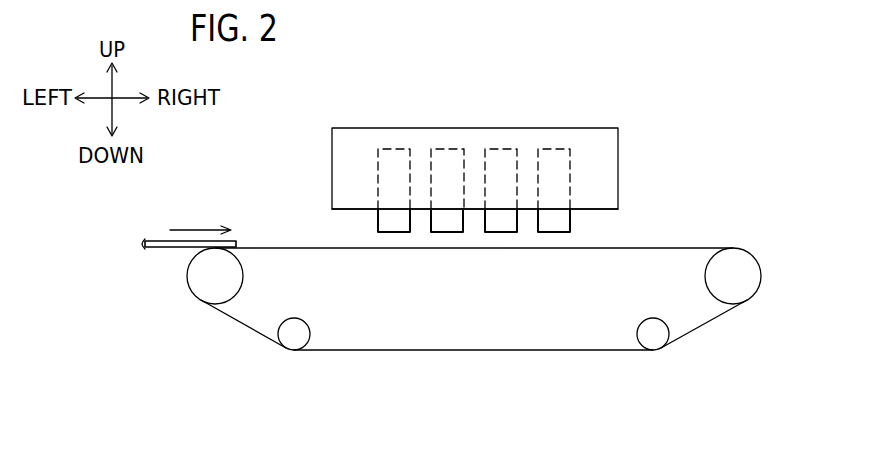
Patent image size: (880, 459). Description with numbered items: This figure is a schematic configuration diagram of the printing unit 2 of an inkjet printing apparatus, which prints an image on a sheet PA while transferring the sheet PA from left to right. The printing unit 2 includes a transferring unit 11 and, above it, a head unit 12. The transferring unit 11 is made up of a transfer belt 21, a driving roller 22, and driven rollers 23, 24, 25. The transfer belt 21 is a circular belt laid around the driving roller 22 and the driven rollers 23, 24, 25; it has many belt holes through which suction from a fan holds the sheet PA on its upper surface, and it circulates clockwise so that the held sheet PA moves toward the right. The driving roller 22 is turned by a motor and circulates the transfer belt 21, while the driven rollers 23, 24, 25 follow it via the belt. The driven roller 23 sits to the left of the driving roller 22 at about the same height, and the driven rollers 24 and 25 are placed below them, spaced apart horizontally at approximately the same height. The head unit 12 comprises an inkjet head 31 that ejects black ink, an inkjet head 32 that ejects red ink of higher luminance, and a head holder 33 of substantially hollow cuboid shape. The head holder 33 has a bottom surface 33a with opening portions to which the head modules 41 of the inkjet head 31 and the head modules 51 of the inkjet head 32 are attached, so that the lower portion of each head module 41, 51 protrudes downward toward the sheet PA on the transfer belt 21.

The printing unit 2 is at (730, 135).
The transferring unit 11 is at (472, 310).
The head unit 12 is at (510, 182).
The transfer belt 21 is at (667, 247).
The driving roller 22 is at (757, 273).
The driven roller 23 is at (190, 278).
The driven roller 24 is at (293, 343).
The driven roller 25 is at (655, 345).
The inkjet head 31 is at (420, 145).
The inkjet head 32 is at (527, 145).
The head holder 33 is at (618, 147).
The bottom surface 33a is at (600, 210).
The head module 41 is at (447, 222).
The head module 51 is at (555, 222).
The sheet PA is at (163, 240).